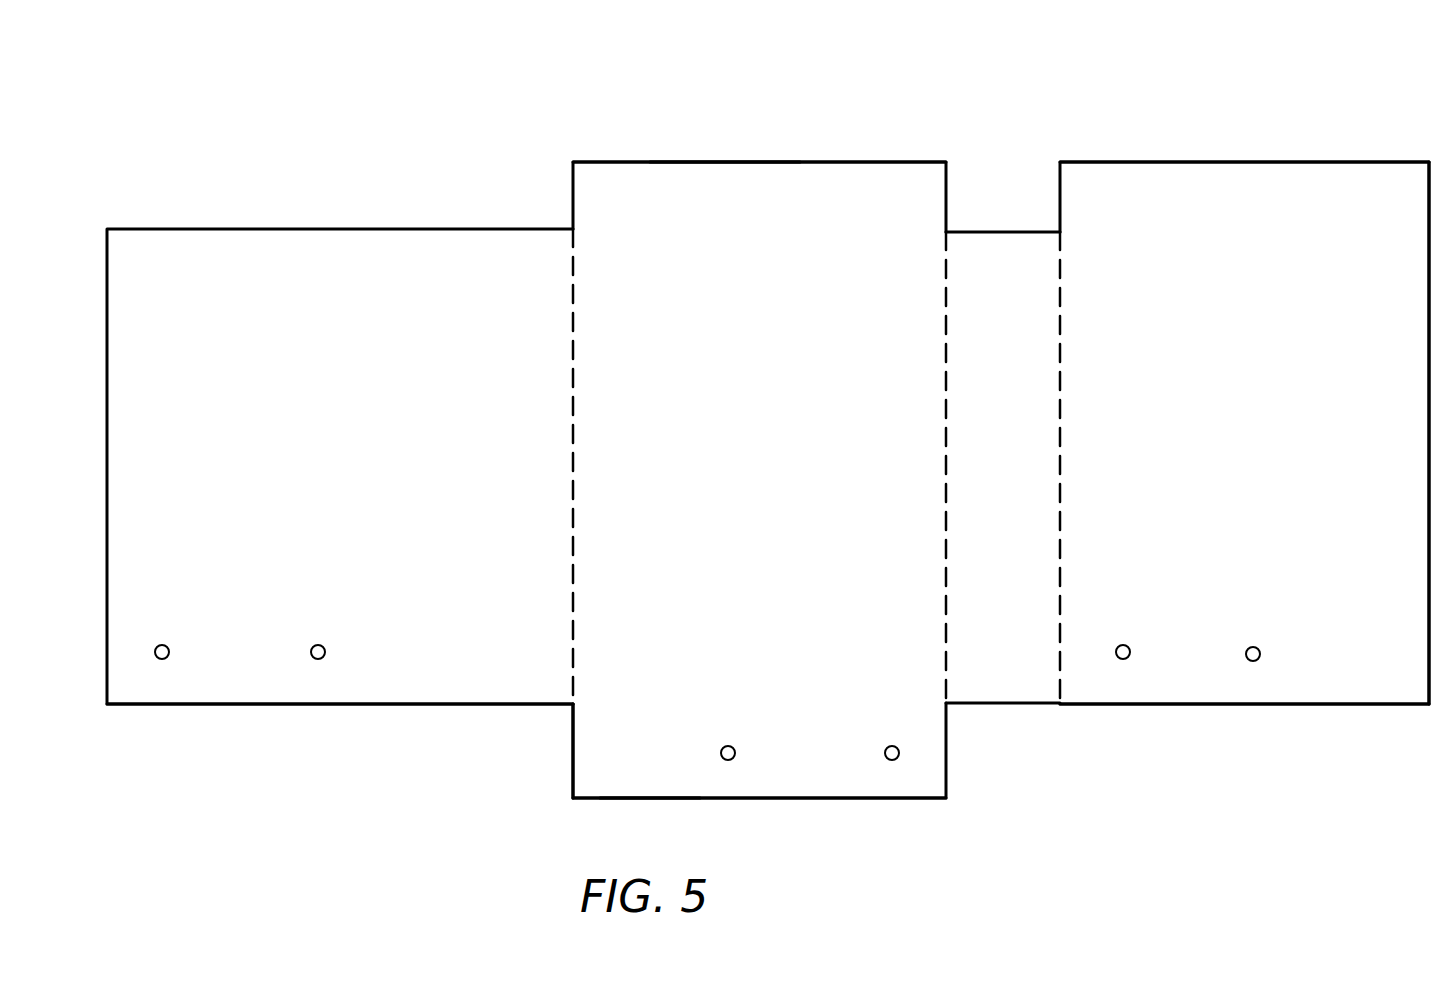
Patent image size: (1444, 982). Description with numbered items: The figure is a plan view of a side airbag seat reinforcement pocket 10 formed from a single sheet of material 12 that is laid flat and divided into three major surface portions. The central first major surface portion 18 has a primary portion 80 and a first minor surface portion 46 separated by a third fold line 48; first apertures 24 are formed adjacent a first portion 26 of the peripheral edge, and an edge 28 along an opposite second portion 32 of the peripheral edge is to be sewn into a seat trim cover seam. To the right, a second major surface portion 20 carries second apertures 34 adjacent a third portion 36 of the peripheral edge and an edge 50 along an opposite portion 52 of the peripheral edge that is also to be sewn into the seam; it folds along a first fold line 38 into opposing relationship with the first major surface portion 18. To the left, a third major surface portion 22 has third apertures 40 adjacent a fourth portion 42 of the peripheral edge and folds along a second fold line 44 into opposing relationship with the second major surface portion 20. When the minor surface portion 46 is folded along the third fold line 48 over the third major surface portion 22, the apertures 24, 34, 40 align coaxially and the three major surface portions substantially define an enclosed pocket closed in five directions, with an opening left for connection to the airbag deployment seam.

The side airbag seat reinforcement pocket 10 is at (728, 34).
The sheet of material 12 is at (598, 206).
The first major surface portion 18 is at (895, 183).
The second major surface portion 20 is at (1120, 180).
The third major surface portion 22 is at (313, 245).
The first aperture 24 is at (728, 760).
The first portion of the peripheral edge 26 is at (835, 800).
The edge 28 is at (652, 162).
The second portion of the peripheral edge 32 is at (738, 163).
The second aperture 34 is at (1128, 658).
The third portion of the peripheral edge 36 is at (1210, 705).
The first fold line 38 is at (1052, 617).
The third aperture 40 is at (166, 658).
The fourth portion of the peripheral edge 42 is at (278, 705).
The second fold line 44 is at (568, 621).
The first minor surface portion 46 is at (641, 760).
The third fold line 48 is at (636, 664).
The edge 50 is at (1263, 162).
The portion of the peripheral edge 52 is at (1388, 163).
The primary portion 80 is at (792, 218).